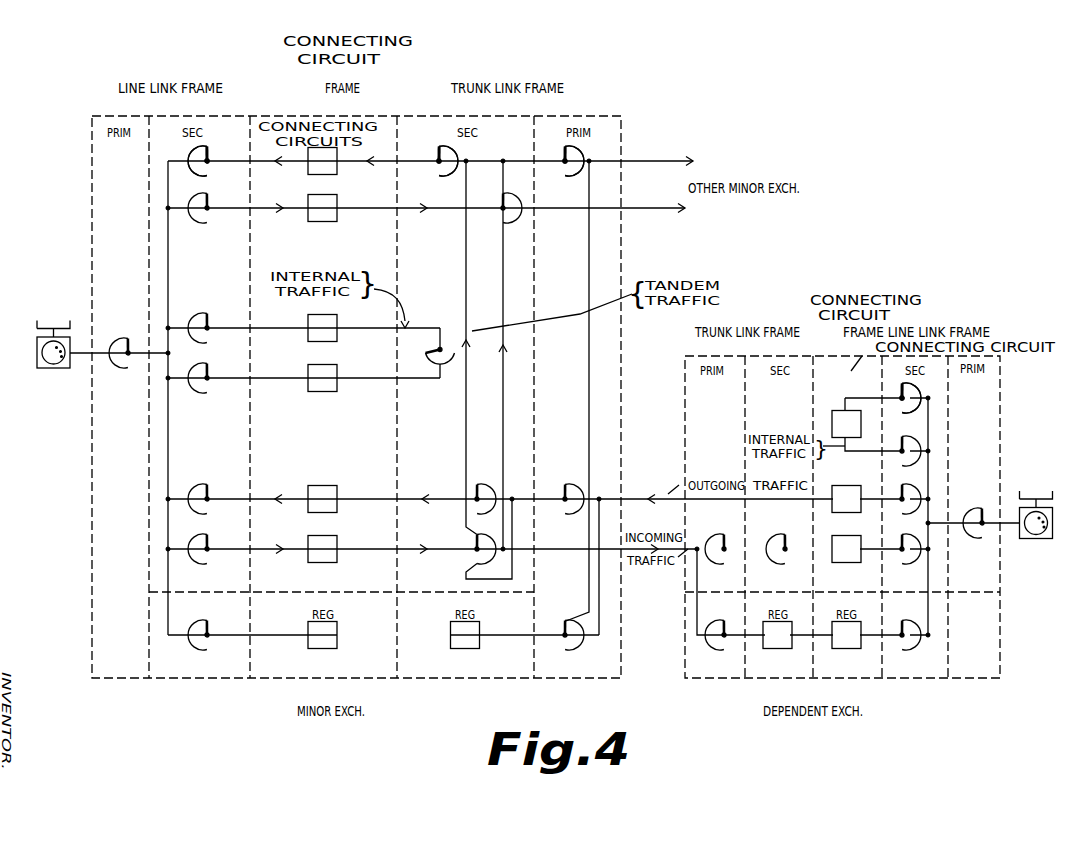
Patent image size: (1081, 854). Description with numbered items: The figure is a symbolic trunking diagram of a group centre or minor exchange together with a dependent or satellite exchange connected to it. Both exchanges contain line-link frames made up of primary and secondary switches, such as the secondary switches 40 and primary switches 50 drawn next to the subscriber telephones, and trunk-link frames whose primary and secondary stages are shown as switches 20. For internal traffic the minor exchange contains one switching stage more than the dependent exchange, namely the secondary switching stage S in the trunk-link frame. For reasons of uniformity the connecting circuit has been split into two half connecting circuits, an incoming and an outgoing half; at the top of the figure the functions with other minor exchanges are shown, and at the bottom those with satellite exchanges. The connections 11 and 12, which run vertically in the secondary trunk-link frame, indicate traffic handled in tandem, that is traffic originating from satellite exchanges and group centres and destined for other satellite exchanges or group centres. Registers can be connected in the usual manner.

The line link frame secondary switch 40 is at (561, 276).
The line link frame primary switch 50 is at (546, 430).
The trunk link frame switch 20 is at (611, 350).
The tandem connection 11 is at (466, 280).
The tandem connection 12 is at (503, 280).
The secondary switching stage S is at (457, 387).